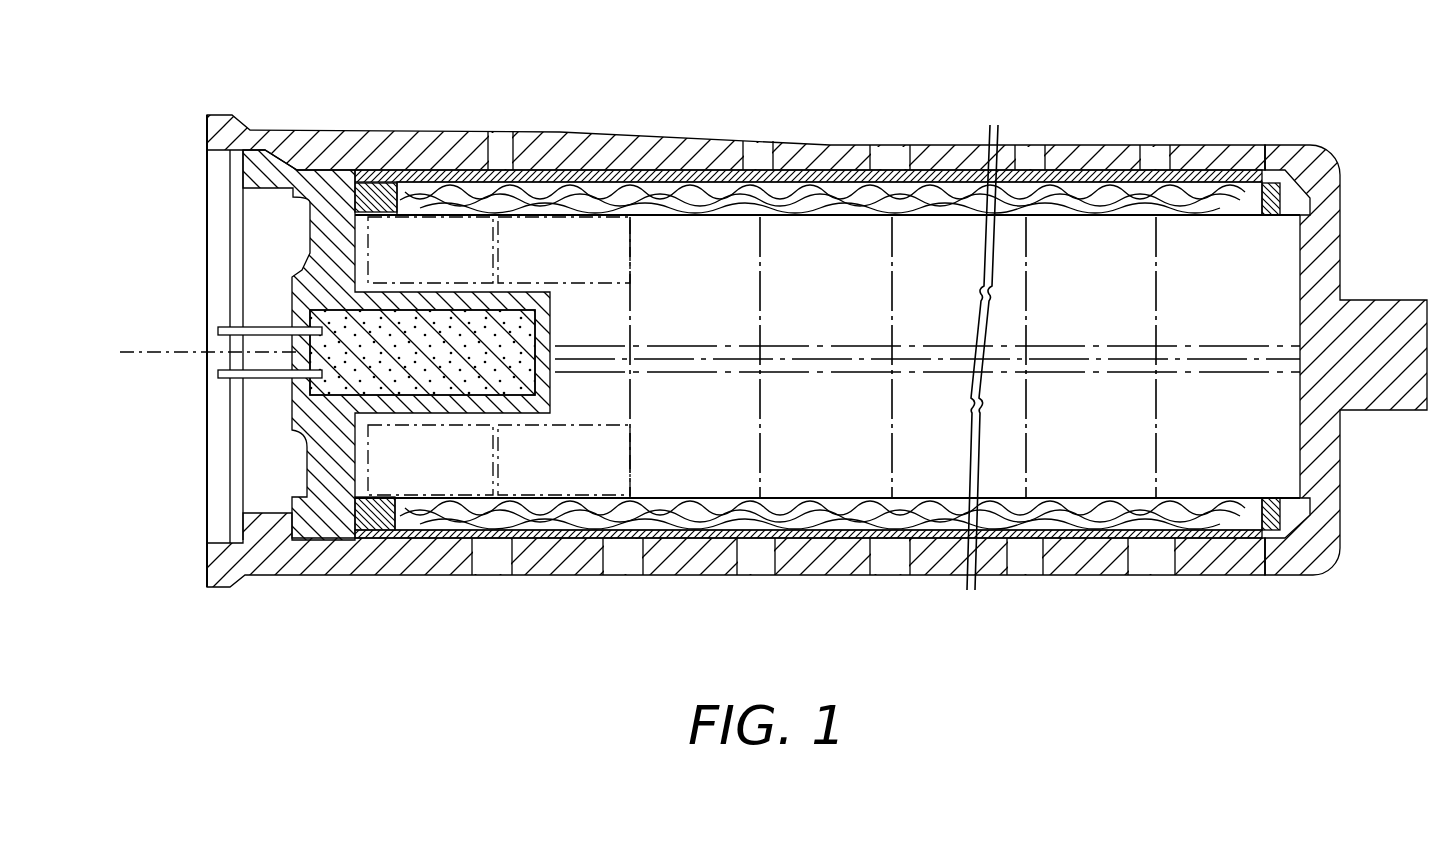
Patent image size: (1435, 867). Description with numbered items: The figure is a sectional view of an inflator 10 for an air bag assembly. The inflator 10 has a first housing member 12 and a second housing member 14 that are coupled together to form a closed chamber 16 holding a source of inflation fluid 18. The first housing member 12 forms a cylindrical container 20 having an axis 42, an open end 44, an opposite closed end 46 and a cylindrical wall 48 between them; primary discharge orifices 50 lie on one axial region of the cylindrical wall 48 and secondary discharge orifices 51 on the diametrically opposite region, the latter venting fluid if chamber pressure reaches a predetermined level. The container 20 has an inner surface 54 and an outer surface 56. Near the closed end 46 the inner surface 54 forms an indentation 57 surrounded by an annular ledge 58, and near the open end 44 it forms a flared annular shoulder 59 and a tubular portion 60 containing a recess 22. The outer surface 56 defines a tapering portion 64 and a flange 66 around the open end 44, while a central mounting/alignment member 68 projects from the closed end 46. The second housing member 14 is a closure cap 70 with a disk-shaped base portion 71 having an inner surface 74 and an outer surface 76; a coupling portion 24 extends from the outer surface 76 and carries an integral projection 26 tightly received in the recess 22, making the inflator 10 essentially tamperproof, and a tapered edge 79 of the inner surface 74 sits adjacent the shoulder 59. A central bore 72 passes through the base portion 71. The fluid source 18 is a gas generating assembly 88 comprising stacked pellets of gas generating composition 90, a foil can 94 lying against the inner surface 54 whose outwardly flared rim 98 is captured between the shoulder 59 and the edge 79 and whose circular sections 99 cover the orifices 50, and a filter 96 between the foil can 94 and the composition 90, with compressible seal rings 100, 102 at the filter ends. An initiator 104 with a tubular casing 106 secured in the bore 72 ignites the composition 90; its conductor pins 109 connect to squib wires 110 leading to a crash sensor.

The inflator 10 is at (727, 62).
The first housing member 12 is at (832, 150).
The second housing member 14 is at (325, 165).
The closed chamber 16 is at (840, 318).
The source of inflation fluid 18 is at (1052, 275).
The container 20 is at (1068, 145).
The recess 22 is at (250, 130).
The coupling portion 24 is at (247, 237).
The integral projection 26 is at (250, 150).
The axis 42 is at (218, 331).
The open end 44 is at (213, 188).
The closed end 46 is at (1338, 248).
The cylindrical wall 48 is at (960, 143).
The primary discharge orifices 50 is at (493, 563).
The secondary discharge orifices 51 is at (636, 145).
The inner surface 54 is at (1118, 160).
The outer surface 56 is at (575, 132).
The indentation 57 is at (1303, 300).
The annular ledge 58 is at (1338, 200).
The flared annular shoulder 59 is at (320, 185).
The tubular portion 60 is at (215, 150).
The tapering portion 64 is at (595, 575).
The flange 66 is at (205, 587).
The central mounting/alignment member 68 is at (1395, 400).
The closure cap 70 is at (273, 500).
The base portion 71 is at (355, 443).
The central bore 72 is at (413, 292).
The inner surface 74 is at (353, 257).
The outer surface 76 is at (307, 260).
The tapered edge 79 is at (322, 577).
The gas generating assembly 88 is at (1222, 560).
The gas generating composition 90 is at (808, 427).
The foil can 94 is at (1120, 545).
The filter 96 is at (687, 420).
The outwardly flared rim 98 is at (320, 548).
The circular sections 99 is at (767, 540).
The compressible seal ring 100 is at (1268, 190).
The compressible seal ring 102 is at (387, 180).
The initiator 104 is at (440, 375).
The tubular casing 106 is at (512, 292).
The conductor pins 109 is at (300, 437).
The squib wires 110 is at (190, 376).